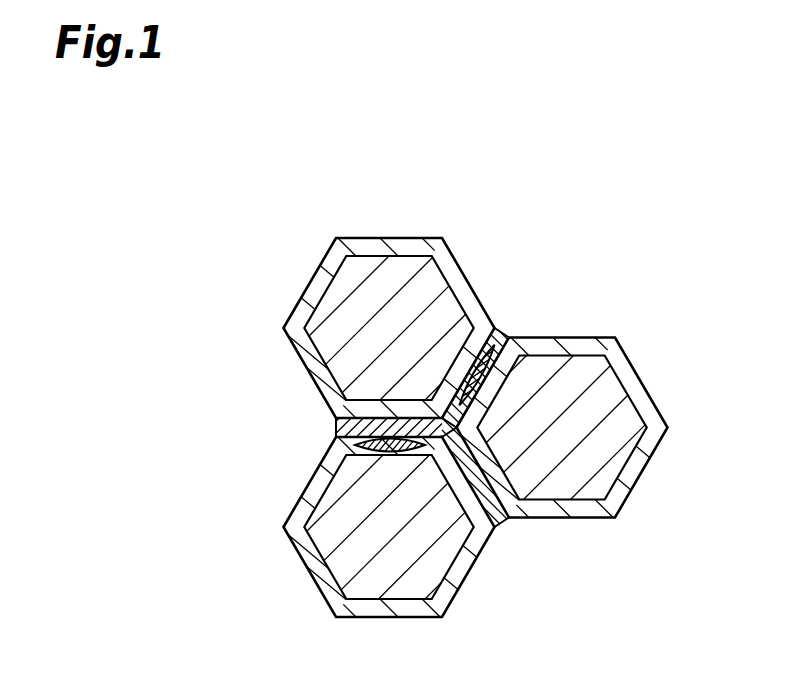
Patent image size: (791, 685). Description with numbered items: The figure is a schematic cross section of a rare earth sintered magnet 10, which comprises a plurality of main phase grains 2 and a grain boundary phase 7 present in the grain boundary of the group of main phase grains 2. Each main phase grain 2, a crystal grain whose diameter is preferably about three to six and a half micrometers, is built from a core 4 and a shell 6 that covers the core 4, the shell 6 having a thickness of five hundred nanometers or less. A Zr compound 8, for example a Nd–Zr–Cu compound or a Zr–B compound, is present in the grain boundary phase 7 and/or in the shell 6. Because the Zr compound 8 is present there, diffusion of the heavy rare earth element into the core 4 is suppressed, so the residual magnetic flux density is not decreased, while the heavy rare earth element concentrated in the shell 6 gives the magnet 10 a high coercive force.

The rare earth sintered magnet 10 is at (498, 376).
The main phase grain 2 is at (584, 410).
The core 4 is at (592, 366).
The shell 6 is at (632, 377).
The grain boundary phase 7 is at (502, 528).
The Zr compound 8 is at (483, 356).